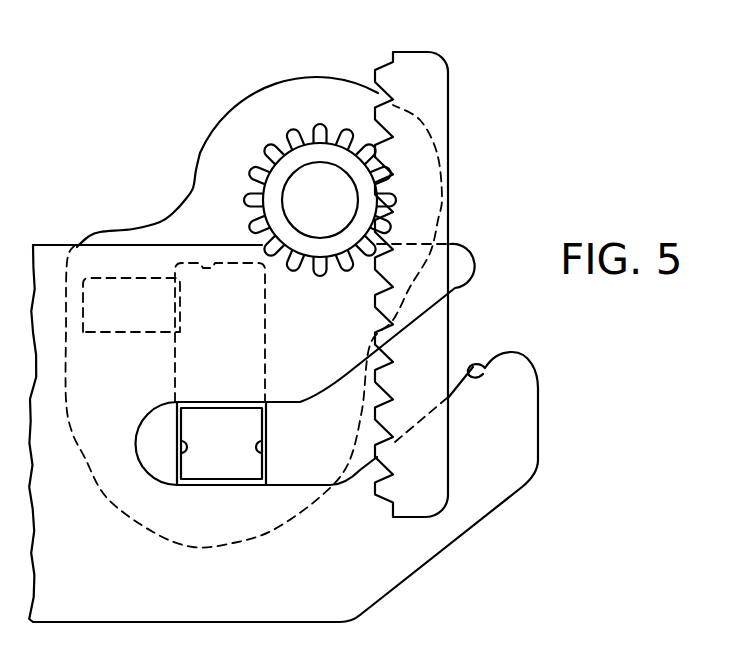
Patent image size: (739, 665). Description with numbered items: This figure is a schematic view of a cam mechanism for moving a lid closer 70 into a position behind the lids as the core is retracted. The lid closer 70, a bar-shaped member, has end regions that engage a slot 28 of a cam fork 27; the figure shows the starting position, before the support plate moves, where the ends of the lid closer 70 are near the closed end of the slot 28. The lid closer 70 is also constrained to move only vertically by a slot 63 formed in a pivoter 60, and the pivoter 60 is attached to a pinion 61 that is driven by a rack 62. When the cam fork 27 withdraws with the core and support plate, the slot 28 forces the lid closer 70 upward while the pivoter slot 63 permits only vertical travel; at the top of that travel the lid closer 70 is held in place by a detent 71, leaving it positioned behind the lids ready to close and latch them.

The cam fork 27 is at (396, 572).
The slot 28 is at (487, 368).
The pivoter 60 is at (145, 228).
The pinion 61 is at (322, 124).
The rack 62 is at (443, 95).
The slot 63 is at (193, 258).
The lid closer 70 is at (213, 472).
The detent 71 is at (103, 290).